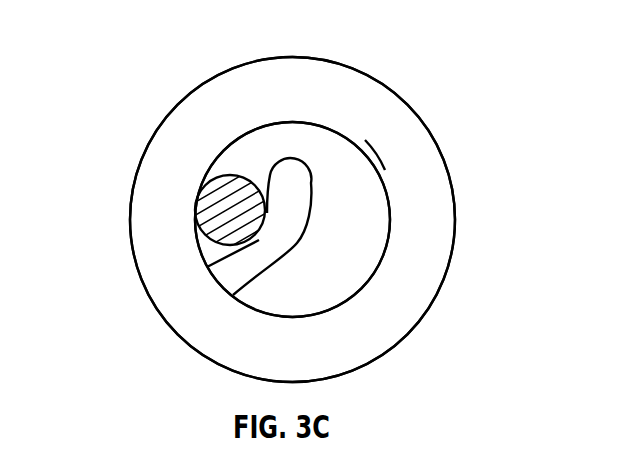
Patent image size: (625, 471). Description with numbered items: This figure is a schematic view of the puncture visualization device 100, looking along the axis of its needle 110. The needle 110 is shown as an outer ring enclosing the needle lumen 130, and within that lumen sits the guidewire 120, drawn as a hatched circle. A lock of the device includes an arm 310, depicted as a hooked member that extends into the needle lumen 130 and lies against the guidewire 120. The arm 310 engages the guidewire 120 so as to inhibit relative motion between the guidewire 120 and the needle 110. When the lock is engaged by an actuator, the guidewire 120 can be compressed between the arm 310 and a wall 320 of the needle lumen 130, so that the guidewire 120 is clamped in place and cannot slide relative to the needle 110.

The puncture visualization device 100 is at (175, 56).
The needle 110 is at (147, 217).
The guidewire 120 is at (222, 200).
The needle lumen 130 is at (352, 270).
The arm 310 is at (290, 212).
The wall of the needle lumen 320 is at (356, 156).